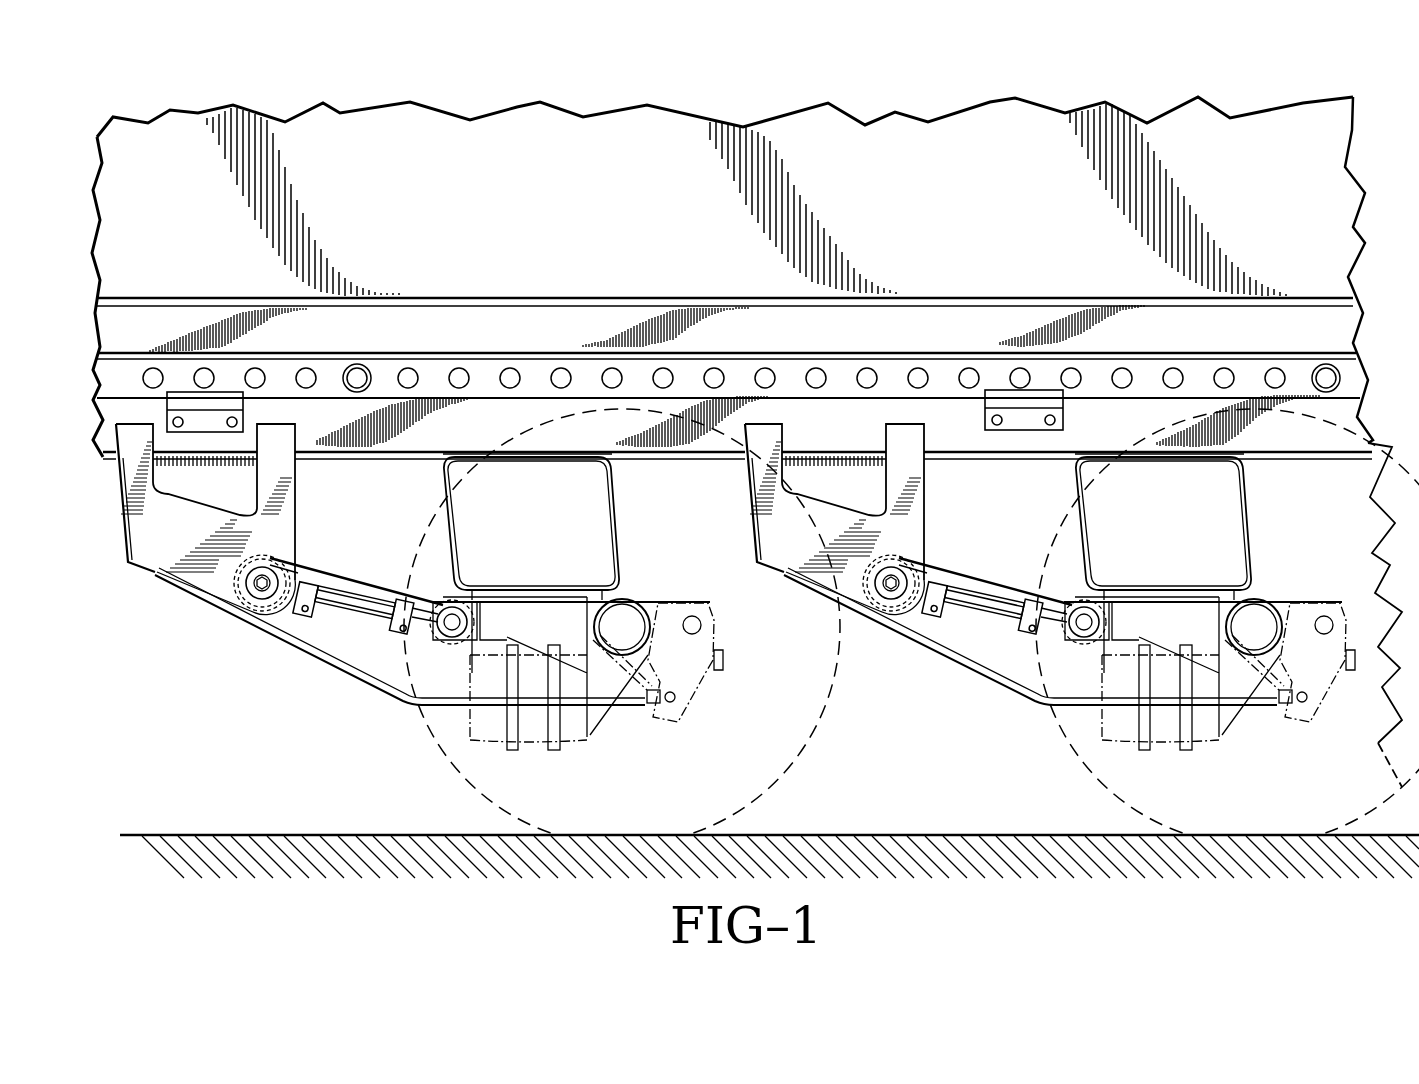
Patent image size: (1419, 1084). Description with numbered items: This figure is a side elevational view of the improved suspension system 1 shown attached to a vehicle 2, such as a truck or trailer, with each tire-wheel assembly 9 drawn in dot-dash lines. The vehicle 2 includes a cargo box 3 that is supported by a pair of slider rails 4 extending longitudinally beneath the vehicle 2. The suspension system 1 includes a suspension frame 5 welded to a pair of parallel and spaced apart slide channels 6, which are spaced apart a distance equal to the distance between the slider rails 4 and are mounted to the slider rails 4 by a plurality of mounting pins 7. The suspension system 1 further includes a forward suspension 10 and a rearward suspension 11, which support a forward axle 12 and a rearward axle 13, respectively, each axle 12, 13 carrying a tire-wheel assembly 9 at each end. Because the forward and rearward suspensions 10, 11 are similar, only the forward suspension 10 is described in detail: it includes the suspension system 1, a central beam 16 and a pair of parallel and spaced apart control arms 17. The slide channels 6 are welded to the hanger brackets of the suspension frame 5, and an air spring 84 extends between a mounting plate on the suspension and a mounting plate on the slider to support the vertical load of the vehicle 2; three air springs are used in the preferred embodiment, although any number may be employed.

The suspension system 1 is at (250, 738).
The vehicle 2 is at (1315, 118).
The cargo box 3 is at (1320, 238).
The slider rails 4 is at (1195, 372).
The suspension frame 5 is at (280, 526).
The slide channels 6 is at (1013, 432).
The mounting pins 7 is at (359, 366).
The tire-wheel assembly 9 is at (448, 770).
The forward suspension 10 is at (377, 710).
The rearward suspension 11 is at (1069, 662).
The forward axle 12 is at (629, 597).
The rearward axle 13 is at (1278, 606).
The central beam 16 is at (367, 582).
The control arms 17 is at (362, 608).
The air spring 84 is at (582, 510).